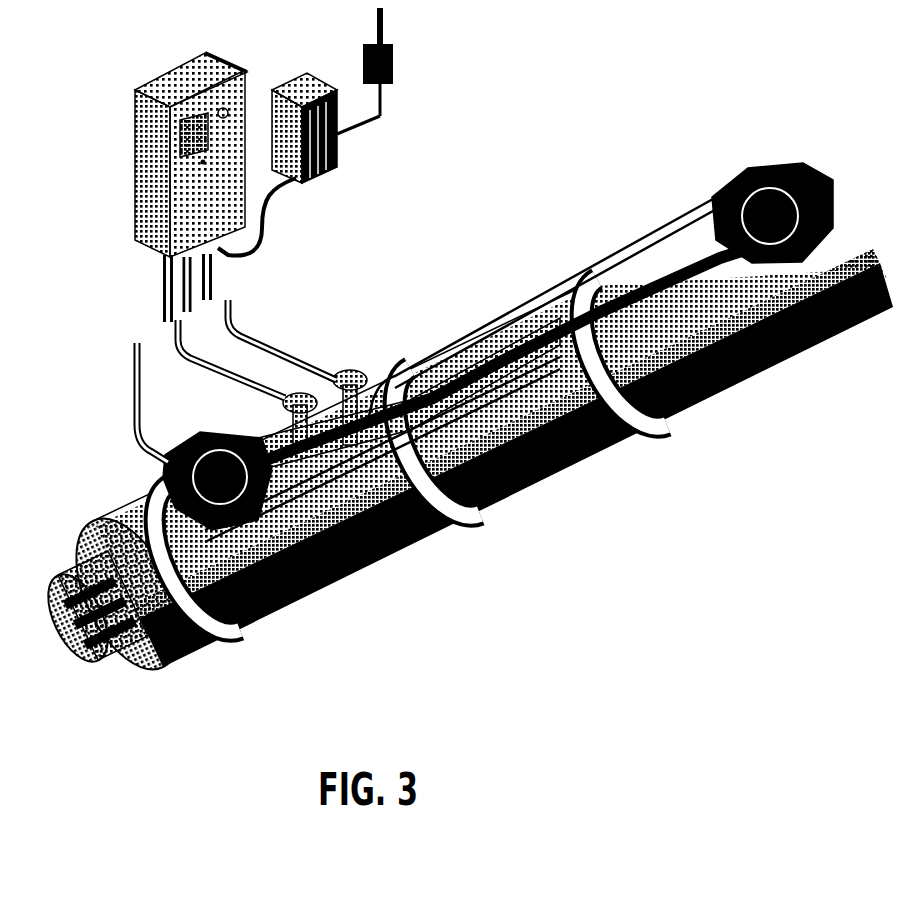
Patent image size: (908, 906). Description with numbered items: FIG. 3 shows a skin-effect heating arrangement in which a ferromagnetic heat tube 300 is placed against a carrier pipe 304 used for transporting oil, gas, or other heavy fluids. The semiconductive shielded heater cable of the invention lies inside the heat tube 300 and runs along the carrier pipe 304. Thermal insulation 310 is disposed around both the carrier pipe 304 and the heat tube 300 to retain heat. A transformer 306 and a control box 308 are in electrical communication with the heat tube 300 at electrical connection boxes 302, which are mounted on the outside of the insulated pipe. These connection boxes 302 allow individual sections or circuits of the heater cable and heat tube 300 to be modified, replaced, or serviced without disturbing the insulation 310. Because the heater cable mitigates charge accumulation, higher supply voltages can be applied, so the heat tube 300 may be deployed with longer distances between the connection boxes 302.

The heat tube 300 is at (430, 384).
The electrical connection boxes 302 is at (158, 462).
The carrier pipe 304 is at (70, 660).
The transformer 306 is at (340, 105).
The control box 308 is at (230, 208).
The thermal insulation 310 is at (265, 624).